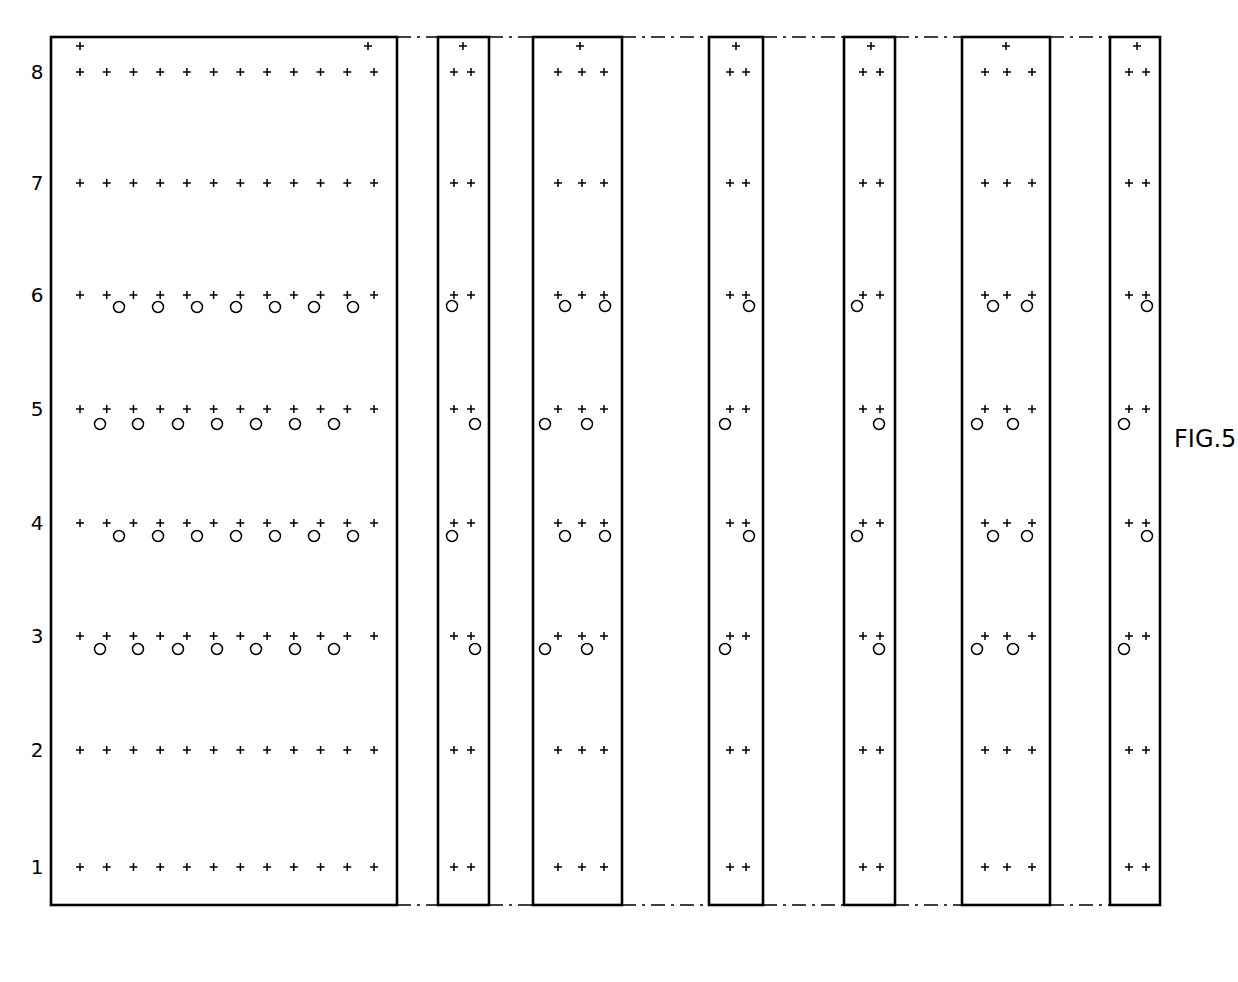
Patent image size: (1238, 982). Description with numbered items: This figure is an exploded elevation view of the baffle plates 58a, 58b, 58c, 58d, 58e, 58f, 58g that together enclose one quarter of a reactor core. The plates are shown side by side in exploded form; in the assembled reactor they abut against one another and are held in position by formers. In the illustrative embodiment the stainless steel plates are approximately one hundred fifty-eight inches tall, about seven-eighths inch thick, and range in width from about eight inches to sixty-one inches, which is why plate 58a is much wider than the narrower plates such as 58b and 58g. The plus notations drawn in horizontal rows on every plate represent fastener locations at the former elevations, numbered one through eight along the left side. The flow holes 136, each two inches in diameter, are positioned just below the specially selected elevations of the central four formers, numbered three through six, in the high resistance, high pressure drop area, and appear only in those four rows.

The baffle plate 58a is at (232, 111).
The baffle plate 58b is at (443, 111).
The baffle plate 58c is at (592, 111).
The baffle plate 58d is at (713, 111).
The baffle plate 58e is at (883, 111).
The baffle plate 58f is at (980, 111).
The baffle plate 58g is at (1150, 111).
The flow holes 136 is at (275, 531).